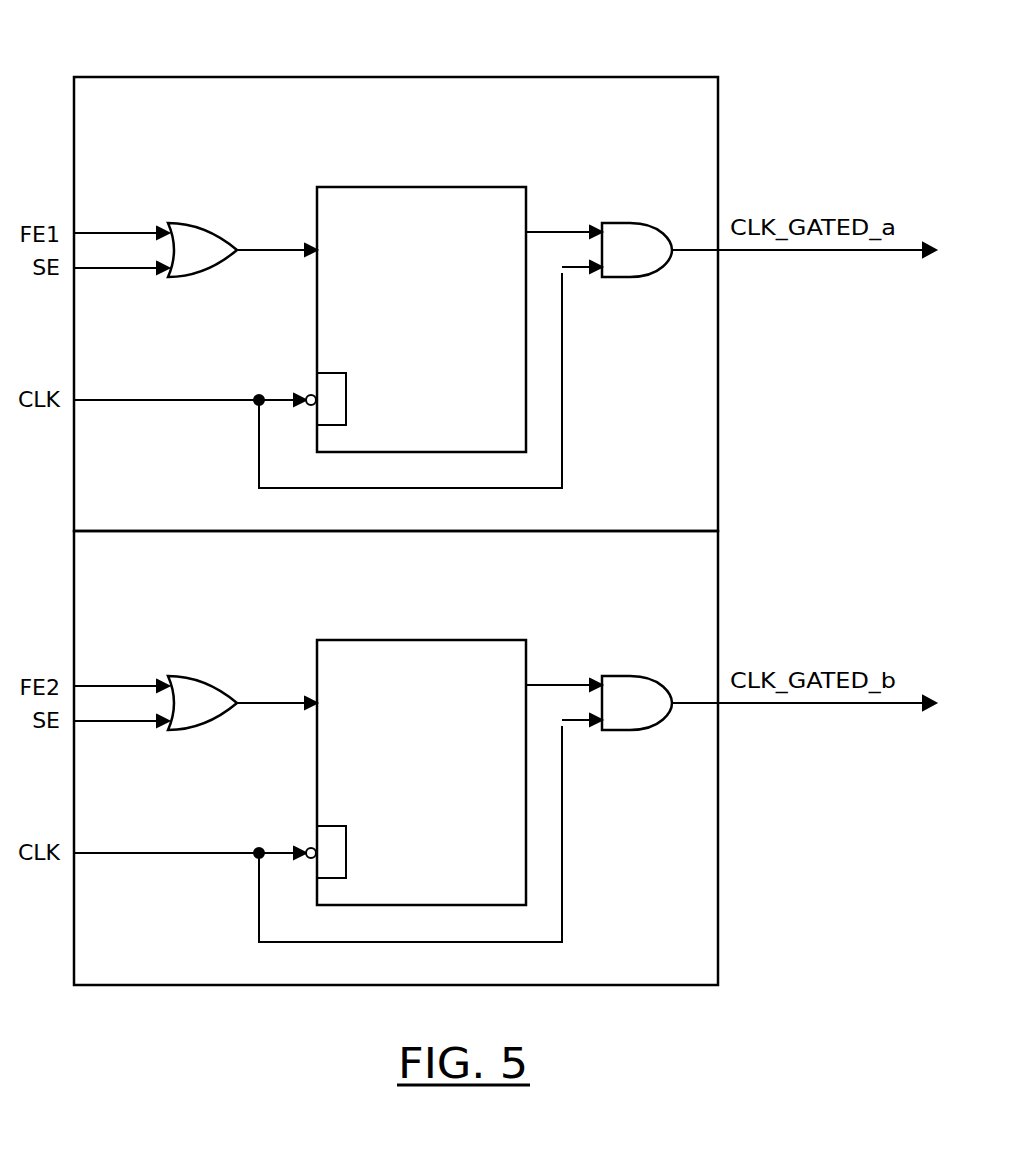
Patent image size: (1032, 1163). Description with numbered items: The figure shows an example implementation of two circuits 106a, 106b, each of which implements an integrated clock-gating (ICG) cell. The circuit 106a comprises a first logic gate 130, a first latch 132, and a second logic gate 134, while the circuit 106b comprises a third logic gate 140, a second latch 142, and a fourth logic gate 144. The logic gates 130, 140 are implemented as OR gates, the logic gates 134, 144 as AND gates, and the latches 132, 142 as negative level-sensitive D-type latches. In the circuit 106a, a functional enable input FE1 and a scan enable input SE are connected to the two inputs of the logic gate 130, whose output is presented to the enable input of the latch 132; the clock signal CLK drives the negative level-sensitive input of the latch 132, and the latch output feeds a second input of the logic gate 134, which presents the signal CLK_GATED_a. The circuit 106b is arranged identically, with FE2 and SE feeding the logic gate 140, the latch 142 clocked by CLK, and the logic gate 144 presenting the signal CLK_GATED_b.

The circuit 106a is at (157, 77).
The circuit 106b is at (157, 985).
The first logic gate 130 is at (183, 222).
The first latch 132 is at (392, 187).
The second logic gate 134 is at (622, 222).
The third logic gate 140 is at (183, 675).
The second latch 142 is at (392, 640).
The fourth logic gate 144 is at (622, 675).